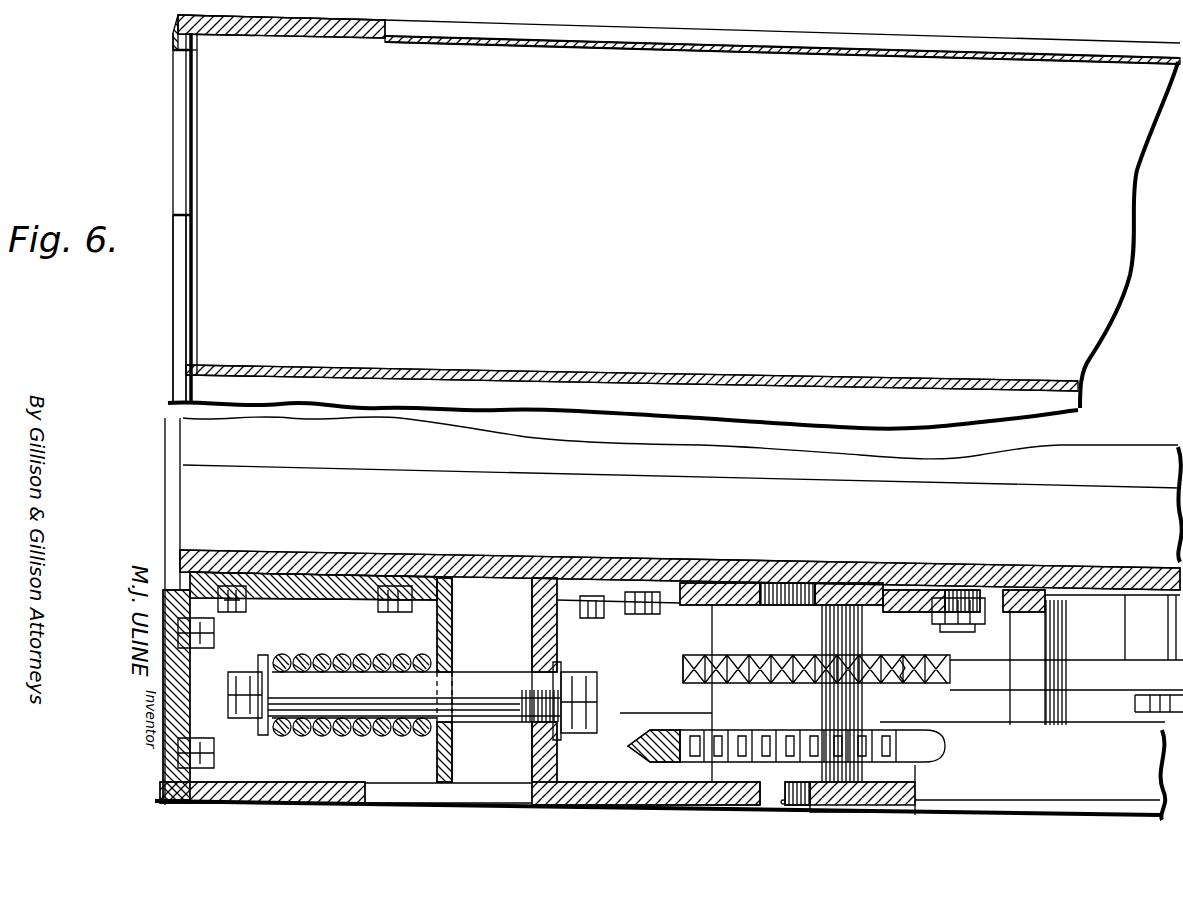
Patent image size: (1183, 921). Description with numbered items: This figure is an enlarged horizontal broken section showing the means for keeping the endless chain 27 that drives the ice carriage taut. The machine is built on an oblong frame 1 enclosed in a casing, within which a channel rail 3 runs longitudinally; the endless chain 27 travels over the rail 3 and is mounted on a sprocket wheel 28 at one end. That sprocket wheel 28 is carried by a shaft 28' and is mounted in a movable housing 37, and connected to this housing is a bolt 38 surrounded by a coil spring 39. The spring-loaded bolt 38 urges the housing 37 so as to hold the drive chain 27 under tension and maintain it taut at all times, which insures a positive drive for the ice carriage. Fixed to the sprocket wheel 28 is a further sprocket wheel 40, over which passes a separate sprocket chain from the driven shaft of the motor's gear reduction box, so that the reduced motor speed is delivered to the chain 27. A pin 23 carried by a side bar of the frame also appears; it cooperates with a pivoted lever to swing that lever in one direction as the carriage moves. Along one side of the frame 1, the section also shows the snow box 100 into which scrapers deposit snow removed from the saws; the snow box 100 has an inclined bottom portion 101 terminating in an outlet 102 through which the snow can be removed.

The oblong frame 1 is at (178, 33).
The channel rail 3 is at (512, 568).
The pin 23 is at (1055, 642).
The endless chain 27 is at (896, 668).
The sprocket wheel 28 is at (901, 668).
The shaft 28' is at (812, 758).
The movable housing 37 is at (708, 590).
The bolt 38 is at (476, 692).
The coil spring 39 is at (301, 660).
The sprocket wheel 40 is at (641, 735).
The snow box 100 is at (674, 222).
The inclined bottom portion 101 is at (230, 318).
The outlet 102 is at (192, 143).